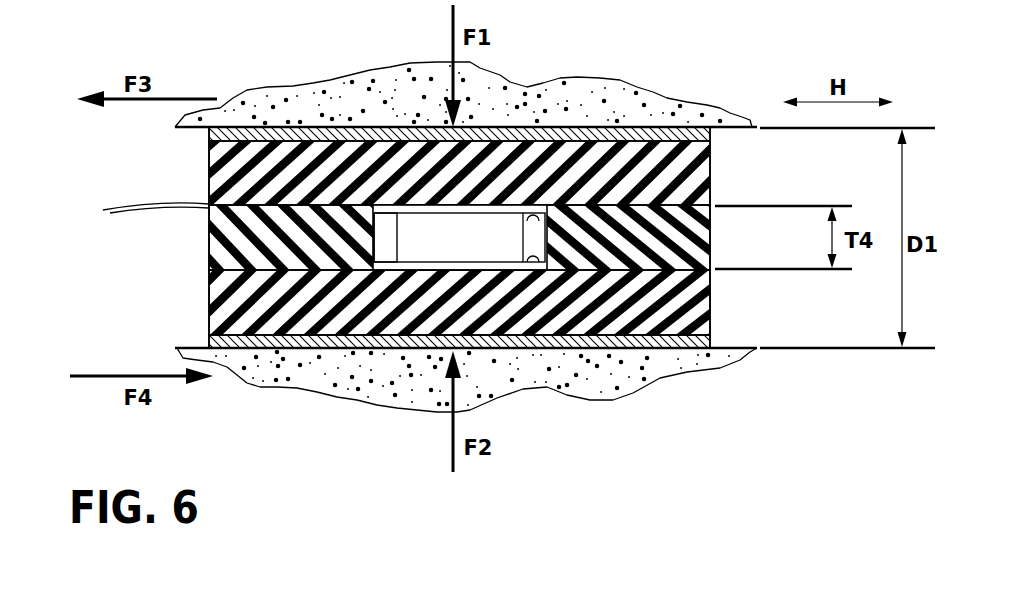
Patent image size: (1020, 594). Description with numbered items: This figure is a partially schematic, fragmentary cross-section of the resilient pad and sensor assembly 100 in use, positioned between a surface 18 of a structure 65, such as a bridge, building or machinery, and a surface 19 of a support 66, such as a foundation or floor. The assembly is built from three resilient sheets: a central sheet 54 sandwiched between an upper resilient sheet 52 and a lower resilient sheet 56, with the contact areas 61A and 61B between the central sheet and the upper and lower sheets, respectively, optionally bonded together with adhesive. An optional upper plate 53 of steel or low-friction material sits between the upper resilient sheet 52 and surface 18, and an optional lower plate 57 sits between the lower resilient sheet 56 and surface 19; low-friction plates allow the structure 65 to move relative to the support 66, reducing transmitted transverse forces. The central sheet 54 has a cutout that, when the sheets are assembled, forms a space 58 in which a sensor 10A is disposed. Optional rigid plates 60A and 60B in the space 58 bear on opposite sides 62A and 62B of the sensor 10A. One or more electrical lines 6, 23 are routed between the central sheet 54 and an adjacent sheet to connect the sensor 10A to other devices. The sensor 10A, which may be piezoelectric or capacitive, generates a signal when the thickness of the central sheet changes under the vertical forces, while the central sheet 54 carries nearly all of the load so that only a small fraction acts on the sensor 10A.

The pad and sensor assembly 100 is at (193, 277).
The upper resilient sheet 52 is at (713, 168).
The central sheet 54 is at (713, 238).
The lower resilient sheet 56 is at (713, 304).
The upper plate 53 is at (713, 135).
The lower plate 57 is at (713, 340).
The structure 65 is at (637, 107).
The support 66 is at (647, 365).
The surface 18 is at (200, 126).
The surface 19 is at (200, 347).
The contact area 61A is at (715, 205).
The contact area 61B is at (715, 271).
The side of sensor 62A is at (428, 205).
The side of sensor 62B is at (418, 270).
The sensor 10A is at (485, 233).
The space 58 is at (383, 224).
The plate 60A is at (541, 208).
The plate 60B is at (528, 262).
The electrical line 6 is at (105, 210).
The electrical line 23 is at (128, 214).